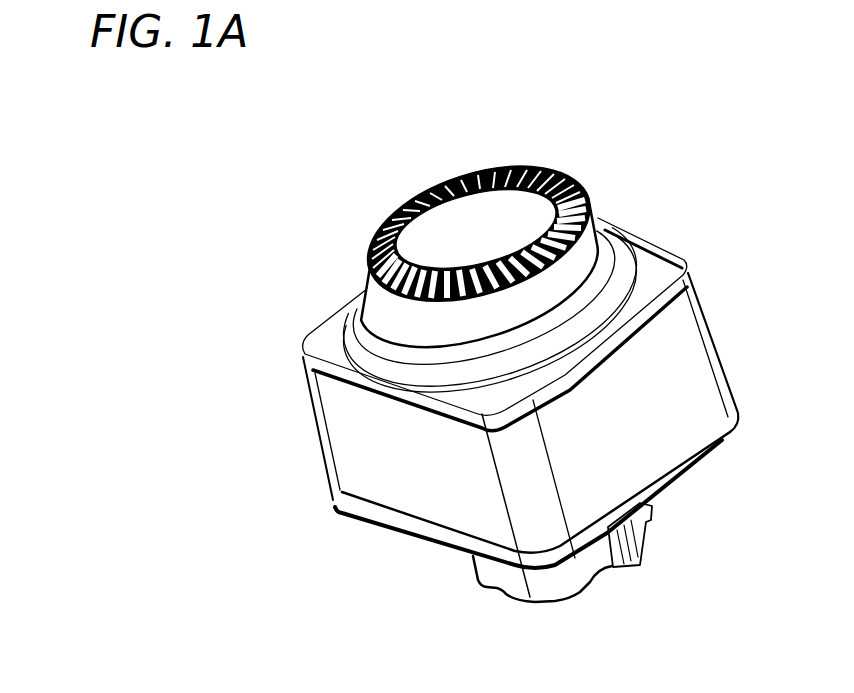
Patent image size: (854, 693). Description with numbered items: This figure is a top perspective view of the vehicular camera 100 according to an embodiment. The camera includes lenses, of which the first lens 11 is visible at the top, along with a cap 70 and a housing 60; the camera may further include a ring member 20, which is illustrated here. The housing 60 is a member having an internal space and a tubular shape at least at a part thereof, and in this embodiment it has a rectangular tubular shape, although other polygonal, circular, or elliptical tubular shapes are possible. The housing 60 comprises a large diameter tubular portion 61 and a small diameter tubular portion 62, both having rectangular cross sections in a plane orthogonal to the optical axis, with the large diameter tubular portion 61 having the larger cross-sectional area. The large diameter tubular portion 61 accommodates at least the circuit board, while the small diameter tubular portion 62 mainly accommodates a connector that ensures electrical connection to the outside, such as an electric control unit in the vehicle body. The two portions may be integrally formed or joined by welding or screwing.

The vehicular camera 100 is at (640, 108).
The first lens 11 is at (427, 232).
The ring member 20 is at (646, 261).
The cap 70 is at (355, 288).
The housing 60 is at (222, 427).
The large diameter tubular portion 61 is at (317, 400).
The small diameter tubular portion 62 is at (470, 567).